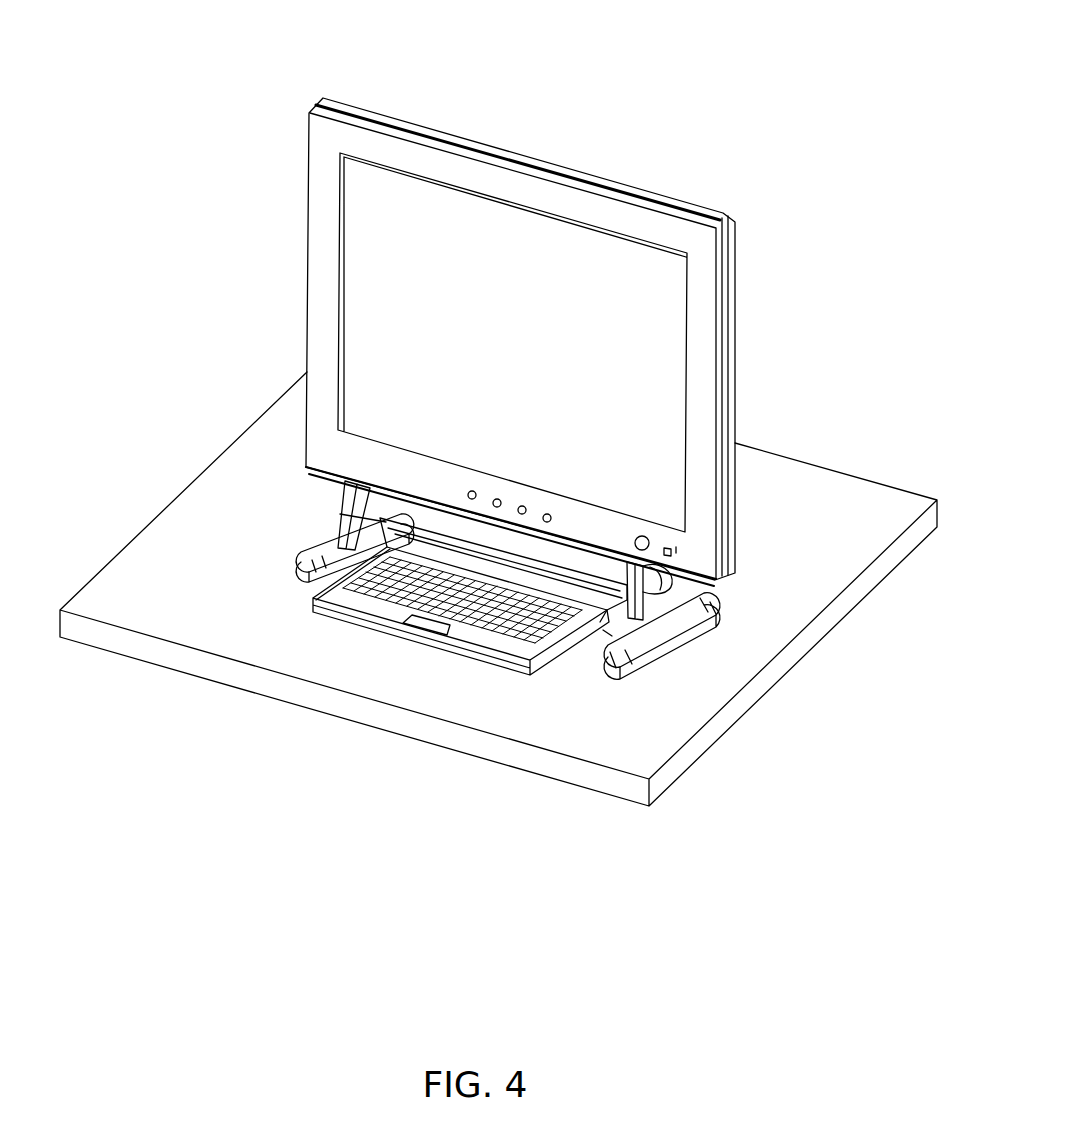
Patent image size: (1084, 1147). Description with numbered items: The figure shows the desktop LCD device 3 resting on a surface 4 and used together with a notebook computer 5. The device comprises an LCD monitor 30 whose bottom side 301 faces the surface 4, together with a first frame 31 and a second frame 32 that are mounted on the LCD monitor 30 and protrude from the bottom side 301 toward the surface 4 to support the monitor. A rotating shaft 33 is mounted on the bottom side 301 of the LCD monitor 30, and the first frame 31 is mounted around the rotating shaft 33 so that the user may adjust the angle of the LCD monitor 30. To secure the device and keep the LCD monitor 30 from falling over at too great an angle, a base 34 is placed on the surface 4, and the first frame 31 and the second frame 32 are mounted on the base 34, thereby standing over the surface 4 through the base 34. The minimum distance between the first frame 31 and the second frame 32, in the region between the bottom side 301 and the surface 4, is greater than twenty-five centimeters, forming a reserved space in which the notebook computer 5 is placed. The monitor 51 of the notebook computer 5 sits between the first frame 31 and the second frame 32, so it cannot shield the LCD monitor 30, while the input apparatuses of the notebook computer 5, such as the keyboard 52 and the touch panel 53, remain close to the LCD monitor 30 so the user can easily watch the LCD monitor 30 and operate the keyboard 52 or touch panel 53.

The desktop LCD device 3 is at (523, 123).
The LCD monitor 30 is at (380, 237).
The first frame 31 is at (340, 513).
The second frame 32 is at (703, 623).
The rotating shaft 33 is at (335, 485).
The base 34 is at (603, 628).
The surface 4 is at (893, 475).
The notebook computer 5 is at (502, 708).
The monitor 51 is at (342, 515).
The keyboard 52 is at (355, 598).
The touch panel 53 is at (435, 622).
The bottom side 301 is at (506, 527).